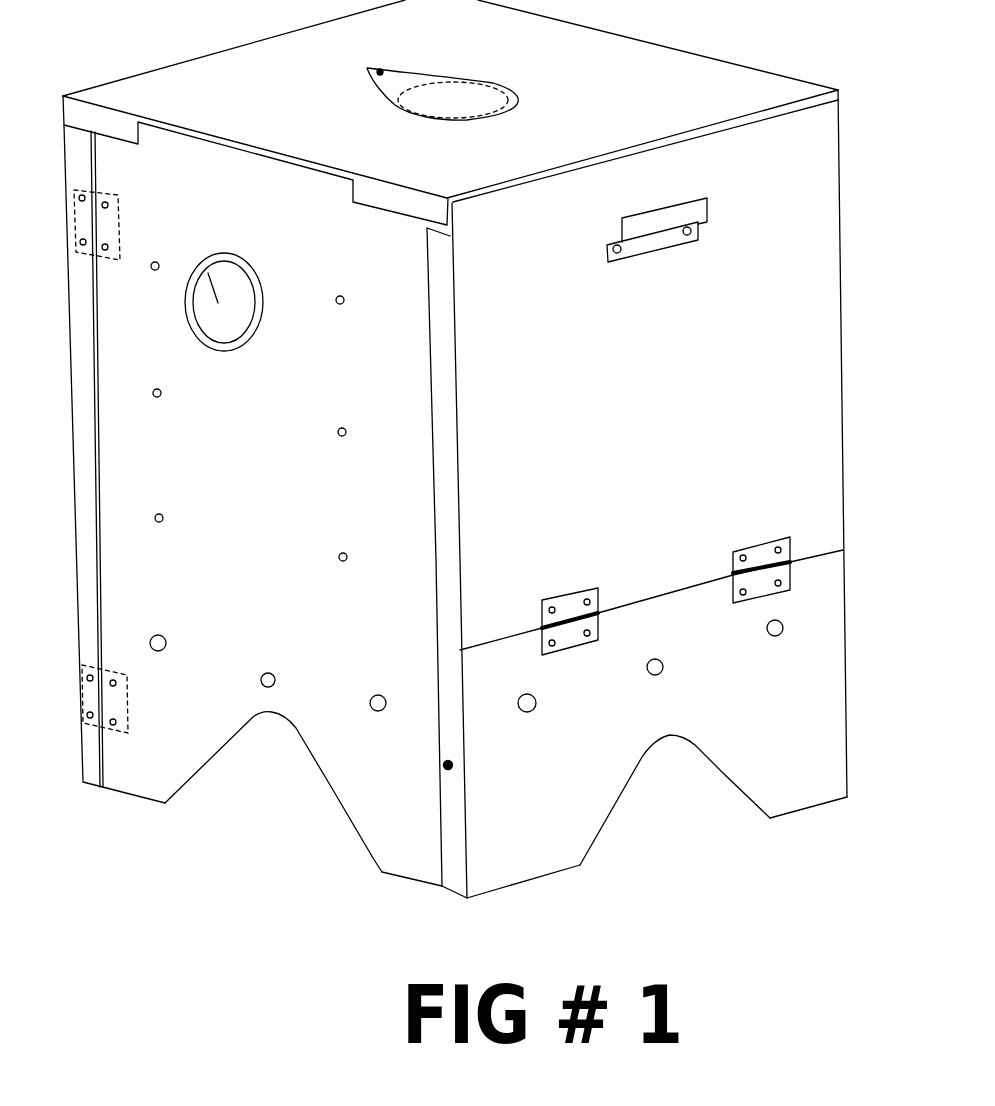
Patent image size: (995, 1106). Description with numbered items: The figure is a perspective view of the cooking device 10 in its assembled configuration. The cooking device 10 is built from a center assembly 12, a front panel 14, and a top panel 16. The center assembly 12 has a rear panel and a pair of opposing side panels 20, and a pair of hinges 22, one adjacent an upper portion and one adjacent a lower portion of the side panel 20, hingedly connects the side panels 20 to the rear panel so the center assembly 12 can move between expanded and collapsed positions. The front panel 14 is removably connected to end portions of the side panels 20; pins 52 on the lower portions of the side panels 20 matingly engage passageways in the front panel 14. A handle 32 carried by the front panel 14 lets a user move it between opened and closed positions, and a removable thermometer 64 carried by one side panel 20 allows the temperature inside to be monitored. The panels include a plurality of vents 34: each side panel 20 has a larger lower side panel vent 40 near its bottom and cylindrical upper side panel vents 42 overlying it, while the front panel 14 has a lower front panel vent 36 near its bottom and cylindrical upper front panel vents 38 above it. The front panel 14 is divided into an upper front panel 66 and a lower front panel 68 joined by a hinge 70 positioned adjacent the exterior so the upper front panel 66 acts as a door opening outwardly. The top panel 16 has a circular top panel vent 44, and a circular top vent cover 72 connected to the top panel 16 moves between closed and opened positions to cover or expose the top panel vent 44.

The cooking device 10 is at (858, 193).
The center assembly 12 is at (73, 391).
The front panel 14 is at (623, 413).
The top panel 16 is at (577, 97).
The side panel 20 is at (388, 787).
The hinge 22 is at (82, 187).
The handle 32 is at (708, 208).
The vents 34 is at (218, 733).
The lower front panel vent 36 is at (612, 805).
The upper front panel vents 38 is at (538, 697).
The lower side panel vent 40 is at (330, 782).
The upper side panel vents 42 is at (280, 677).
The top panel vent 44 is at (500, 82).
The pins 52 is at (158, 262).
The thermometer 64 is at (253, 263).
The upper front panel 66 is at (840, 383).
The lower front panel 68 is at (847, 620).
The hinge 70 is at (598, 615).
The top vent cover 72 is at (440, 76).